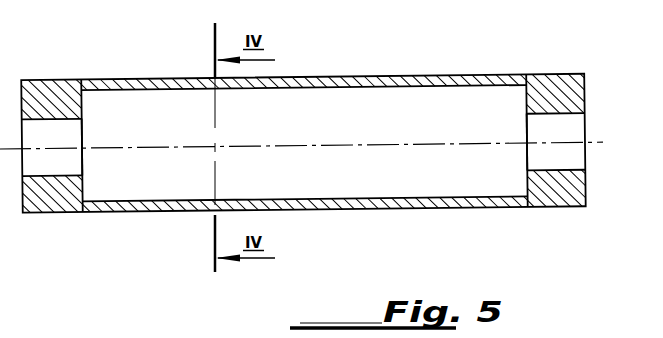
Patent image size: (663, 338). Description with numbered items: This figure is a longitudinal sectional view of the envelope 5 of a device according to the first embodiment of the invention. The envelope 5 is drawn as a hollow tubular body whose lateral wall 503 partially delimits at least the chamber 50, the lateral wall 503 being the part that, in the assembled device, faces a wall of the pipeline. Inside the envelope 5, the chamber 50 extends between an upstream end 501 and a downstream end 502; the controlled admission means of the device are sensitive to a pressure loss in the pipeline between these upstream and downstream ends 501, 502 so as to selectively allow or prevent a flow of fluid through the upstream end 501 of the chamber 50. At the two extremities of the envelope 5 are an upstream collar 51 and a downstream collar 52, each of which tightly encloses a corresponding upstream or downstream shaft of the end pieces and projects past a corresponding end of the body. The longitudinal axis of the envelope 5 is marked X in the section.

The envelope 5 is at (302, 144).
The chamber 50 is at (382, 124).
The upstream collar 51 is at (553, 92).
The downstream collar 52 is at (49, 98).
The upstream end 501 is at (476, 177).
The downstream end 502 is at (120, 177).
The lateral wall 503 is at (352, 205).
The axis X is at (455, 143).